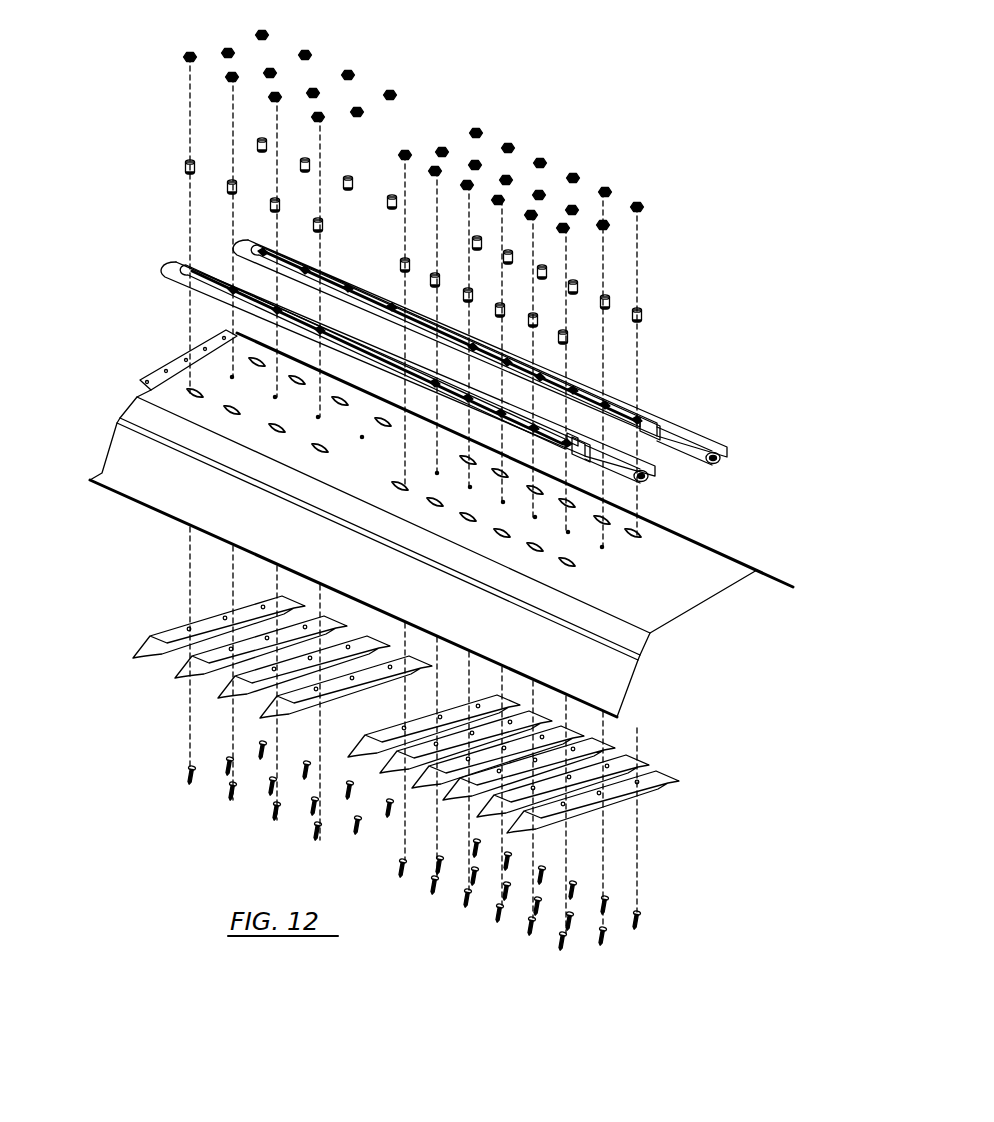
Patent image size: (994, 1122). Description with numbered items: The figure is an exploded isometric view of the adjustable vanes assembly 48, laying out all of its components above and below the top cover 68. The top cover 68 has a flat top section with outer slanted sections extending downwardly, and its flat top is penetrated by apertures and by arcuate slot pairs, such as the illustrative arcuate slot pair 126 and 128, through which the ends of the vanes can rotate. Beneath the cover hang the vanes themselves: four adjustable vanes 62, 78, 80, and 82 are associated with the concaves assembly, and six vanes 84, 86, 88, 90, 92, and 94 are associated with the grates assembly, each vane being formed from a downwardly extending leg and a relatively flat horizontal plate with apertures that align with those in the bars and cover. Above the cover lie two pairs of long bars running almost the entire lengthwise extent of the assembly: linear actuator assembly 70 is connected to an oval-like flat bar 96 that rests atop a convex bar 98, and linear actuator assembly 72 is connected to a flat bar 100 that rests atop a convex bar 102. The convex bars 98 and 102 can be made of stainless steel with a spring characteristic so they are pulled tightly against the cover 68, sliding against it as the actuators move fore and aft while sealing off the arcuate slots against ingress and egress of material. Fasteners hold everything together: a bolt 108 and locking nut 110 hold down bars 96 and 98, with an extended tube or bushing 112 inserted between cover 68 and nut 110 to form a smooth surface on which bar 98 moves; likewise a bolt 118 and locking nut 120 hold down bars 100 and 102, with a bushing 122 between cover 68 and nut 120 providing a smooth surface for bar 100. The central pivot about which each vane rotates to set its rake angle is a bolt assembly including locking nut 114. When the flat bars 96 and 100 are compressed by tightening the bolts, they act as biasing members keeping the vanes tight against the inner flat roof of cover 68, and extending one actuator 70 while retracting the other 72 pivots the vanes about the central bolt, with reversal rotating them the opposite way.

The adjustable vanes assembly 48 is at (574, 122).
The vane 62 is at (260, 718).
The top cover 68 is at (441, 523).
The linear actuator assembly 70 is at (617, 470).
The linear actuator assembly 72 is at (690, 442).
The vane 78 is at (218, 698).
The vane 80 is at (175, 678).
The vane 82 is at (138, 648).
The vane 84 is at (393, 737).
The vane 86 is at (390, 770).
The vane 88 is at (422, 788).
The vane 90 is at (608, 748).
The vane 92 is at (641, 762).
The vane 94 is at (676, 780).
The flat bar 96 is at (200, 268).
The convex bar 98 is at (162, 276).
The flat bar 100 is at (267, 247).
The convex bar 102 is at (247, 250).
The bolt 108 is at (316, 838).
The locking nut 110 is at (322, 114).
The extended tube or bushing 112 is at (326, 230).
The locking nut 114 is at (362, 114).
The bolt 118 is at (389, 818).
The locking nut 120 is at (395, 96).
The extended tube or bushing 122 is at (386, 204).
The arcuate slot 126 is at (326, 452).
The arcuate slot 128 is at (391, 422).